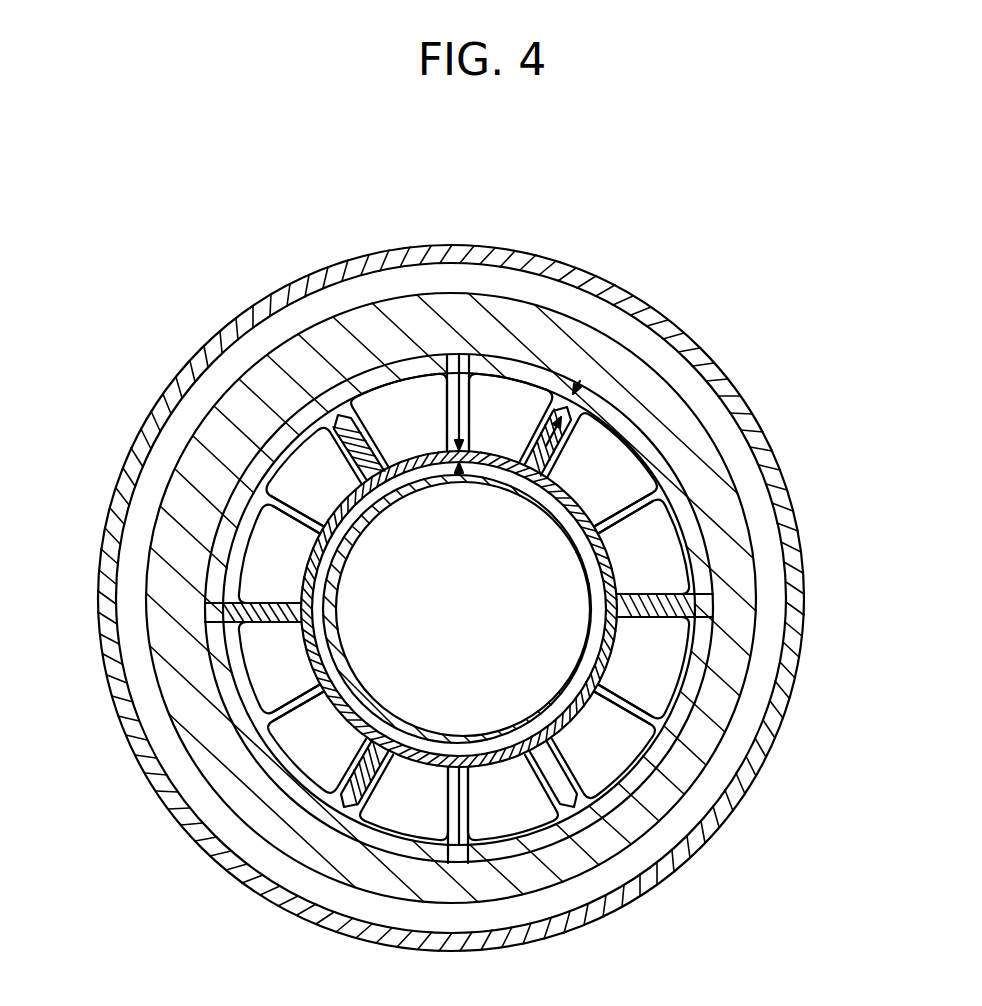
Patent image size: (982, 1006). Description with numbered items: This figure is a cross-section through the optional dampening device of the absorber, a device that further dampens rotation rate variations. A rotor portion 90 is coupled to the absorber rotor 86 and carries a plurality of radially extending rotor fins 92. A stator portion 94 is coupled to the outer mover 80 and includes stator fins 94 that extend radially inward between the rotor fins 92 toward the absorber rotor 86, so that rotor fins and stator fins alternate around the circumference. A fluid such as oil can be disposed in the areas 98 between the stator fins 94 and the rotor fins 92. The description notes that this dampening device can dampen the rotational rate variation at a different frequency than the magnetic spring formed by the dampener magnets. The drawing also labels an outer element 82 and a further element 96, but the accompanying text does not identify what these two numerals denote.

The outer mover 80 is at (362, 330).
The outer pipe 82 is at (600, 912).
The absorber rotor 86 is at (578, 390).
The rotor portion 90 is at (515, 568).
The rotor fins 92 is at (653, 594).
The stator portion 94 is at (430, 378).
The divider wall 96 is at (293, 707).
The areas 98 is at (315, 463).